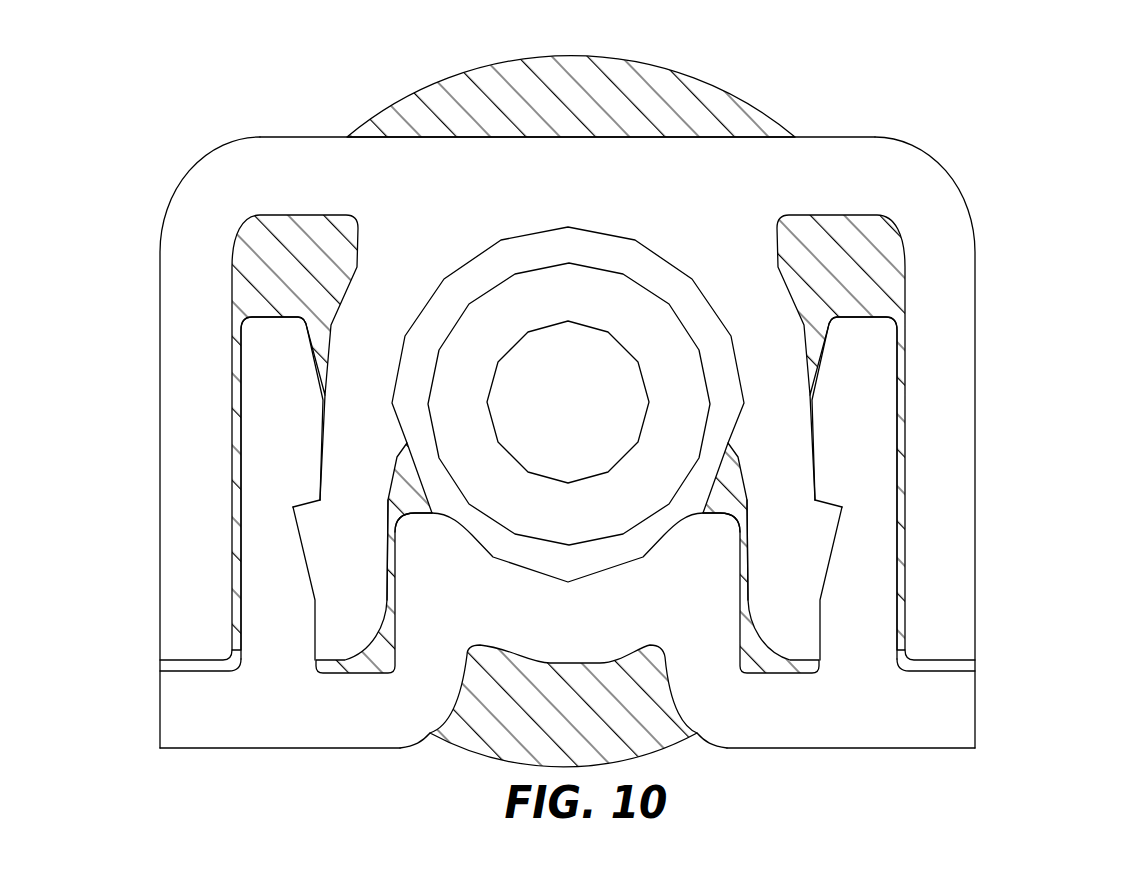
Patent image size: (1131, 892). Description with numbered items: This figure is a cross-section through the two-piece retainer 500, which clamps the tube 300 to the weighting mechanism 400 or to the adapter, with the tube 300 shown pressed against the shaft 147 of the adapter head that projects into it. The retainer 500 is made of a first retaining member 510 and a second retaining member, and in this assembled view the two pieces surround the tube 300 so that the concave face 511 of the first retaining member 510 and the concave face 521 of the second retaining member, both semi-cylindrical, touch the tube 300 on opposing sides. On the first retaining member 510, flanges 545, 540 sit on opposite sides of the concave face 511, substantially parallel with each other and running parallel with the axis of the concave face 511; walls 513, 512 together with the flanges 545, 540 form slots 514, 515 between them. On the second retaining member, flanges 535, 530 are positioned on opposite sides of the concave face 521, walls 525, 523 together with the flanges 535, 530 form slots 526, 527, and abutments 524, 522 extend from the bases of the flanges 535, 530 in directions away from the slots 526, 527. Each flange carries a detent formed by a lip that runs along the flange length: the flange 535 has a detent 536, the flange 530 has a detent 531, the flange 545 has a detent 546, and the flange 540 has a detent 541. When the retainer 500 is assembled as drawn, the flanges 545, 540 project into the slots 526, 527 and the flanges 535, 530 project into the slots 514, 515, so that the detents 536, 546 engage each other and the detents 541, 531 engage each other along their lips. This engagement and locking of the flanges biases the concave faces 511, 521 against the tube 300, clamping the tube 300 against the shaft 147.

The two-piece retainer 500 is at (994, 375).
The first retaining member 510 is at (788, 158).
The concave face 511 is at (560, 222).
The wall 512 is at (943, 289).
The wall 513 is at (193, 415).
The slot 514 is at (335, 240).
The slot 515 is at (840, 258).
The concave face 521 is at (568, 582).
The abutment 522 is at (955, 733).
The wall 523 is at (740, 577).
The abutment 524 is at (173, 727).
The wall 525 is at (397, 586).
The slot 526 is at (360, 667).
The slot 527 is at (753, 677).
The flange 530 is at (834, 404).
The detent 531 is at (818, 497).
The flange 535 is at (262, 382).
The detent 536 is at (317, 493).
The flange 540 is at (752, 440).
The detent 541 is at (840, 508).
The flange 545 is at (342, 432).
The detent 546 is at (297, 508).
The tube 300 is at (448, 350).
The shaft 147 is at (472, 407).
The weighting mechanism 400 is at (430, 105).